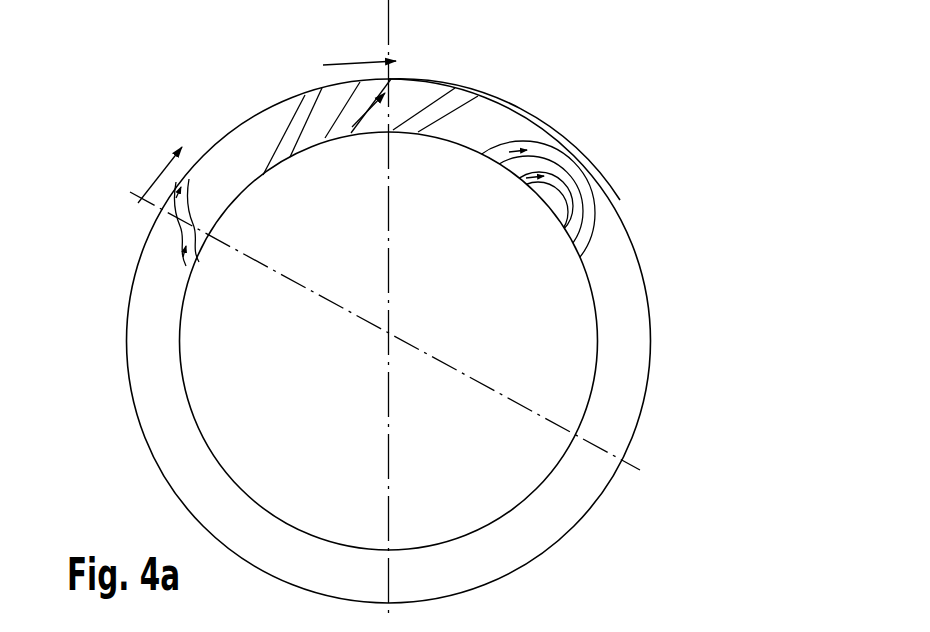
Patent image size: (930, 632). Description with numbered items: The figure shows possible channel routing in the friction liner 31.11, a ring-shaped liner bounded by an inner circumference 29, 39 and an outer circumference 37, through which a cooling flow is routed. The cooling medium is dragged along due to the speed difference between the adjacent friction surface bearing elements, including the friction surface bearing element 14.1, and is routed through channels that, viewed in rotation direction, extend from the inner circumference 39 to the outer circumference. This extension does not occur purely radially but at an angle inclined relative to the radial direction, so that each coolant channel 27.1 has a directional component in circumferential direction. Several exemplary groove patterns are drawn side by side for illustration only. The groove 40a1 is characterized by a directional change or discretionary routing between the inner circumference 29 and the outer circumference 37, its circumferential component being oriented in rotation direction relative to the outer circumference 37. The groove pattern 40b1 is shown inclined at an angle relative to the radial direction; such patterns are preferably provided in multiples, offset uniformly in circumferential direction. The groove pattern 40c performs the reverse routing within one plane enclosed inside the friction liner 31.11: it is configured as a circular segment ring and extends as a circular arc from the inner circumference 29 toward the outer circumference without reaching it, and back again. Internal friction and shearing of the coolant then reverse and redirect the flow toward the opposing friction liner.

The friction surface bearing element 14.1 is at (644, 82).
The coolant channel 27.1 is at (193, 263).
The inner circumference 29 is at (226, 206).
The friction liner 31.11 is at (506, 119).
The outer circumference 37 is at (279, 101).
The inner circumference 39 is at (389, 285).
The groove 40a1 is at (177, 181).
The groove pattern 40b1 is at (404, 79).
The groove pattern 40c is at (600, 195).